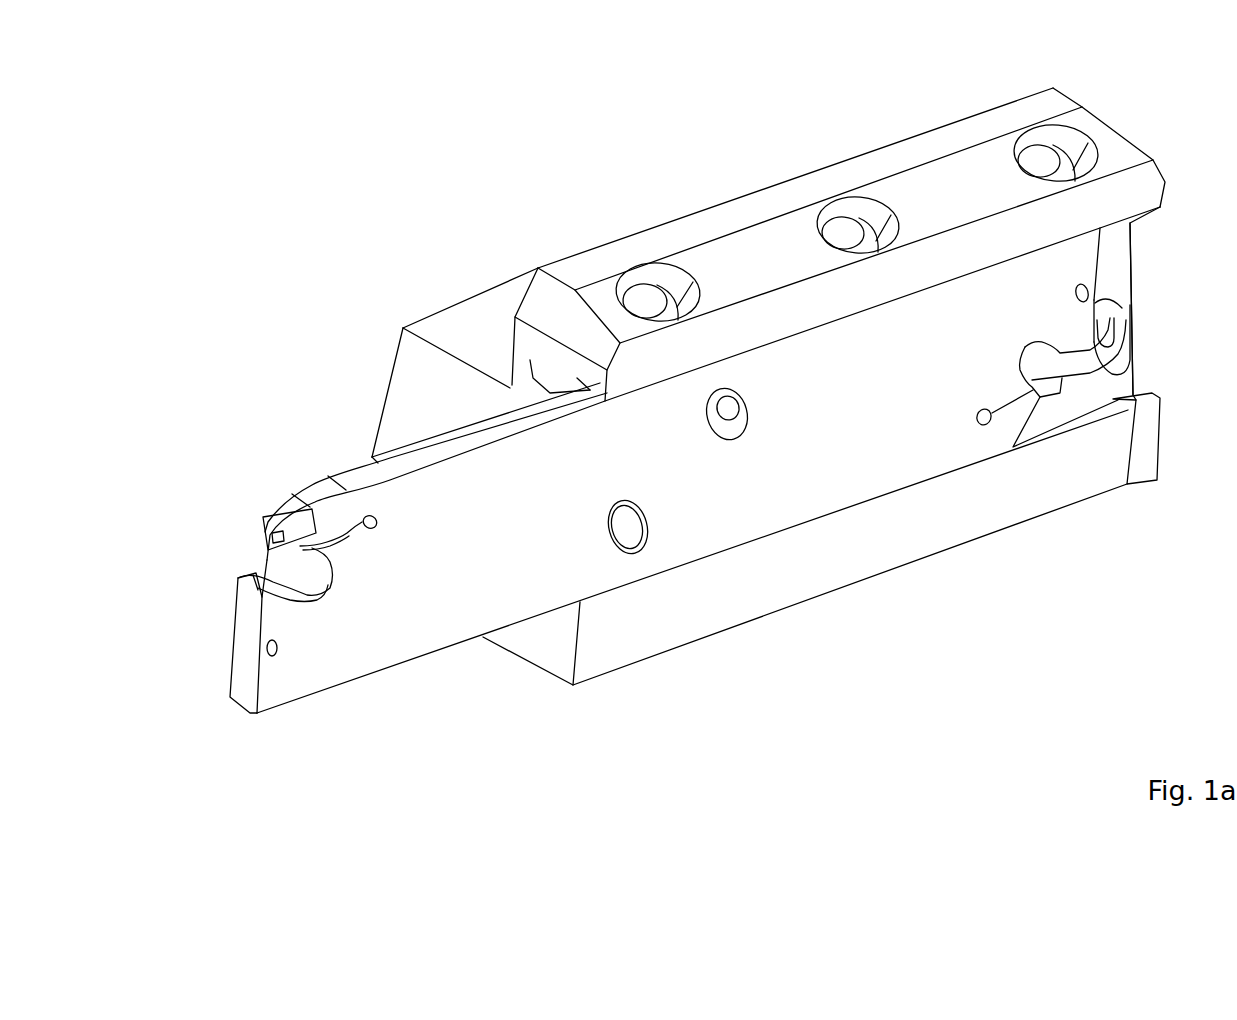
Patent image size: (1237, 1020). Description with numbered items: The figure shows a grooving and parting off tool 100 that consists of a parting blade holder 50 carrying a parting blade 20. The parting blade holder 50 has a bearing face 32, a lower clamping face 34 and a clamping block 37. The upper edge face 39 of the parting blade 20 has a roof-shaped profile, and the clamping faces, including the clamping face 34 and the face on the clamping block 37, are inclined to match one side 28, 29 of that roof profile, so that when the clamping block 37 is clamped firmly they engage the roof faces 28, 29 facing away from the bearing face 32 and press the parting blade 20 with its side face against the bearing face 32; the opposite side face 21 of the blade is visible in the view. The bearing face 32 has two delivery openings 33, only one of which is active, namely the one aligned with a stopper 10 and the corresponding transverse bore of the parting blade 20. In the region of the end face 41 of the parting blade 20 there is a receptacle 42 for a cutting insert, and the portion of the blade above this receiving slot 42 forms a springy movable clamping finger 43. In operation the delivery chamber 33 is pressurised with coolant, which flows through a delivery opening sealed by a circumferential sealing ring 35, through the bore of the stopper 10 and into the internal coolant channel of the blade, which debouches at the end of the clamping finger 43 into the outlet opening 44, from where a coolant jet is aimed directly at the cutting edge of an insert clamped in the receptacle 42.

The grooving and parting off tool 100 is at (461, 224).
The clamping block 37 is at (917, 198).
The parting blade holder 50 is at (458, 343).
The upper edge face 39 is at (468, 429).
The side of the roof profile 29 is at (432, 448).
The parting blade 20 is at (358, 445).
The side face 21 is at (879, 434).
The stopper 10 is at (633, 529).
The side of the roof profile 28 is at (422, 661).
The clamping face 34 is at (1119, 404).
The end face 41 is at (246, 630).
The receptacle 42 is at (285, 557).
The clamping finger 43 is at (298, 508).
The outlet opening 44 is at (278, 538).
The bearing face 32 is at (1115, 265).
The sealing ring 35 is at (1112, 318).
The delivery opening 33 is at (1098, 354).